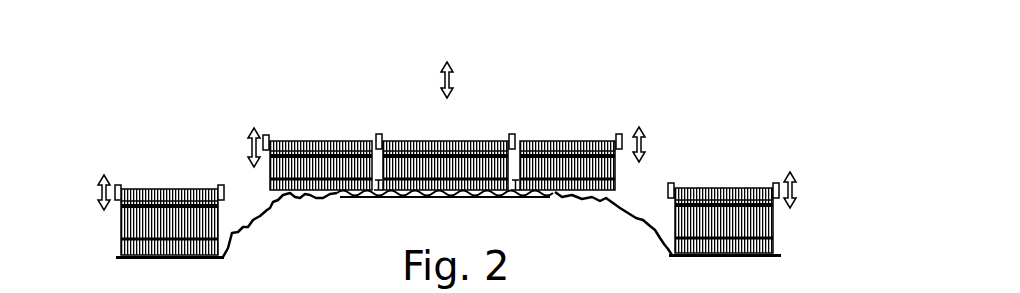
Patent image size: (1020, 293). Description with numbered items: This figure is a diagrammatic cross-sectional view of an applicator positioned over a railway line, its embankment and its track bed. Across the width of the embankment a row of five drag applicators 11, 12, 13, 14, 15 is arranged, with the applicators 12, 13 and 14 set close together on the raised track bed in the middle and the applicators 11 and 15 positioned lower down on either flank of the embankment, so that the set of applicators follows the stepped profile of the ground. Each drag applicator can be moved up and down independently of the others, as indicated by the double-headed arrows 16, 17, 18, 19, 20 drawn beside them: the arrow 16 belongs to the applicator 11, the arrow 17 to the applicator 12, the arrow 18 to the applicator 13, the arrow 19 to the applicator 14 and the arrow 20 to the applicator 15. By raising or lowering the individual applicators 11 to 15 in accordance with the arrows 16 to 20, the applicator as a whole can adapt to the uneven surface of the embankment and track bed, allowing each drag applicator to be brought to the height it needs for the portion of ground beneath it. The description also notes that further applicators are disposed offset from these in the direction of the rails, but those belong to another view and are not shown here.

The drag applicator 11 is at (172, 182).
The drag applicator 12 is at (307, 137).
The drag applicator 13 is at (452, 139).
The drag applicator 14 is at (562, 139).
The drag applicator 15 is at (718, 192).
The arrow 16 is at (97, 190).
The arrow 17 is at (248, 140).
The arrow 18 is at (440, 80).
The arrow 19 is at (645, 142).
The arrow 20 is at (797, 188).